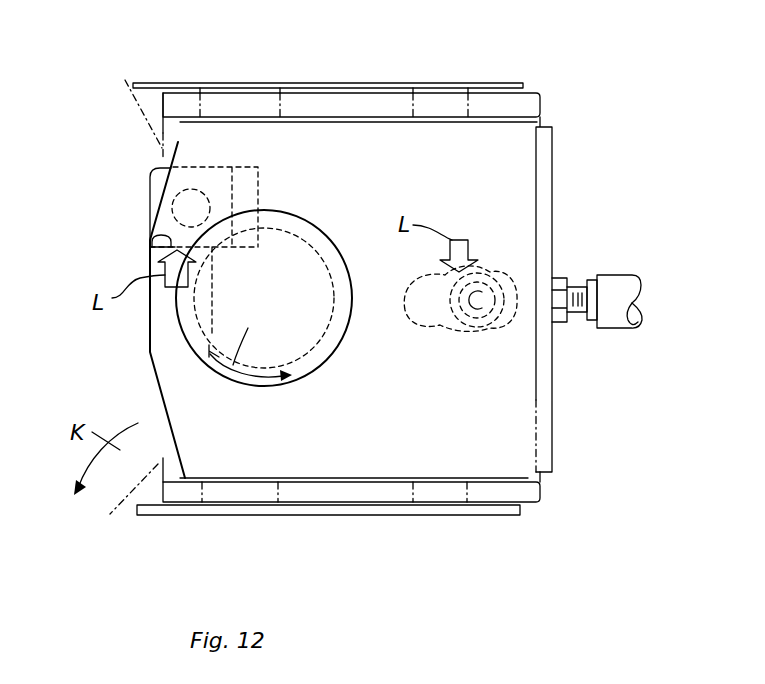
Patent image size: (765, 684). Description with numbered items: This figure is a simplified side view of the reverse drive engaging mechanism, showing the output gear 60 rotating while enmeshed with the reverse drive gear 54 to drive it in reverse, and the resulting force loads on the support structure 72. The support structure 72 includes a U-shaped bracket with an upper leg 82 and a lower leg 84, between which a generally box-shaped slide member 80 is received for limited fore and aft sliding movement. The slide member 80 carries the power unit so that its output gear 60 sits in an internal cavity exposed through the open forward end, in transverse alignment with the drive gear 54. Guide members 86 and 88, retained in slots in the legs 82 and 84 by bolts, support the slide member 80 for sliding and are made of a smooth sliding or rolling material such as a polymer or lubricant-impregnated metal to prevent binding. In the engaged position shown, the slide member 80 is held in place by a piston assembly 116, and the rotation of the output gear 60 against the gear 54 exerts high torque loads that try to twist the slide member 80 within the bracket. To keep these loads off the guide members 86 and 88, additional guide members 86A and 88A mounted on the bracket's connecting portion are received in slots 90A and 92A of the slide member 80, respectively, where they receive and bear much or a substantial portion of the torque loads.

The reverse drive gear 54 is at (195, 400).
The output gear 60 is at (333, 293).
The support structure 72 is at (568, 82).
The slide member 80 is at (552, 172).
The upper leg 82 is at (540, 110).
The lower leg 84 is at (542, 500).
The guide member 86 is at (283, 94).
The guide member 86A is at (150, 208).
The guide member 88 is at (467, 93).
The guide member 88A is at (501, 288).
The slot 90A is at (150, 245).
The slot 92A is at (440, 326).
The piston assembly 116 is at (577, 282).